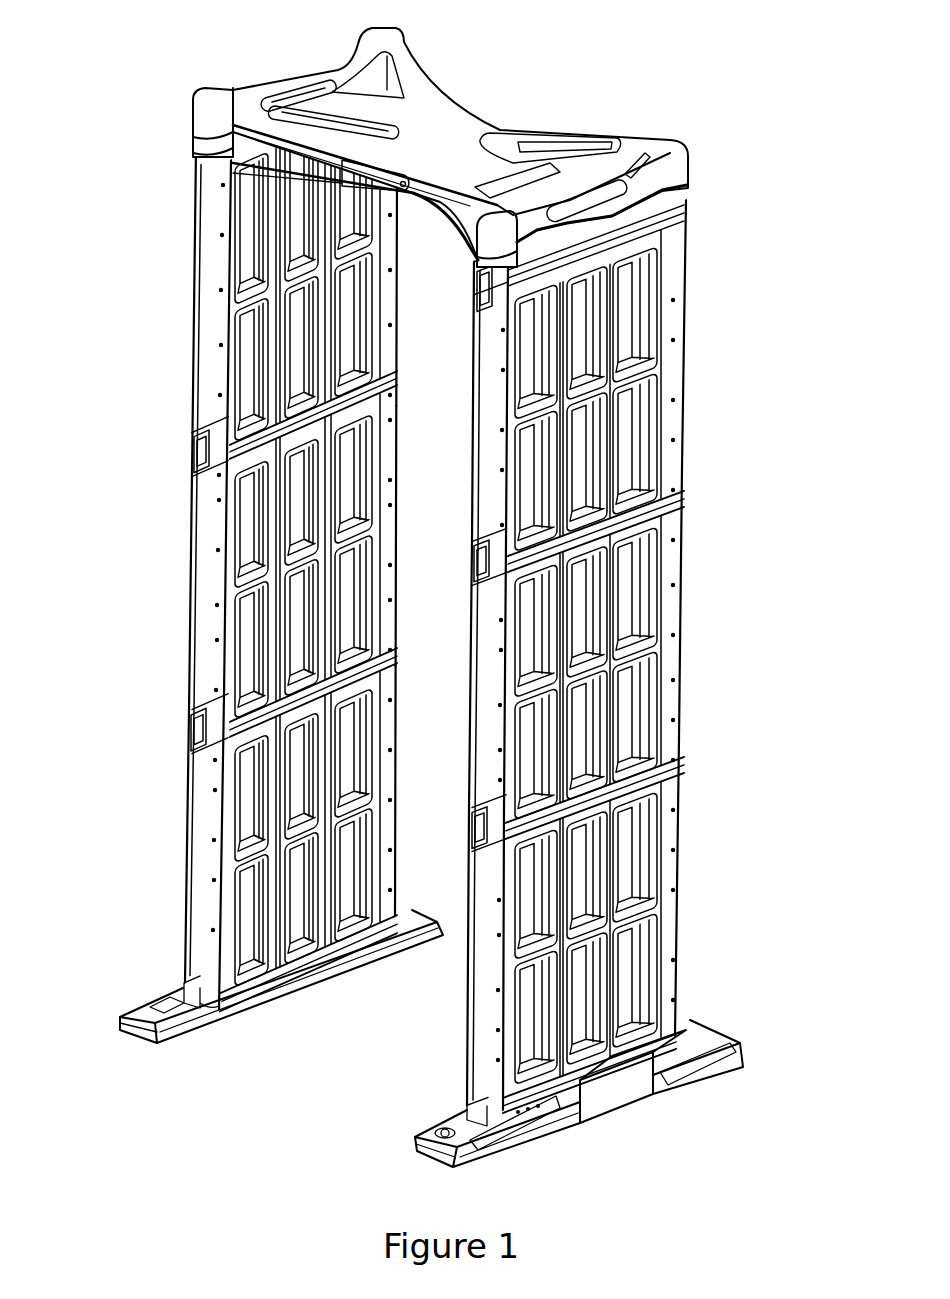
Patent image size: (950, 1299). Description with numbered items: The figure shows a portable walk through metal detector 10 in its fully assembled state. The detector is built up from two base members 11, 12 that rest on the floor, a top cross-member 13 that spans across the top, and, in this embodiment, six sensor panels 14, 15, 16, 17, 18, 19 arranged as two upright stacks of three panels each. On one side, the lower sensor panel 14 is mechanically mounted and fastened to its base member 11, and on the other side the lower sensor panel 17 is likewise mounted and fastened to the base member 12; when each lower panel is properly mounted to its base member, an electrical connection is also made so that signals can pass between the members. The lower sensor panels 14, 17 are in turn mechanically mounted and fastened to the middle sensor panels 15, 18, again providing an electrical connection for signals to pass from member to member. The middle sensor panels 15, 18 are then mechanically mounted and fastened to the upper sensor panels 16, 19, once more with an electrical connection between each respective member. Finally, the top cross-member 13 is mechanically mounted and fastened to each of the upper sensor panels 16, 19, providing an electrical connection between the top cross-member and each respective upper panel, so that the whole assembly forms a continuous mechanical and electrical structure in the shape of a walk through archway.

The portable walk through metal detector 10 is at (459, 598).
The base member 11 is at (117, 1040).
The base member 12 is at (634, 1120).
The top cross-member 13 is at (492, 98).
The lower sensor panel 14 is at (175, 890).
The middle sensor panel 15 is at (180, 605).
The upper sensor panel 16 is at (184, 325).
The lower sensor panel 17 is at (688, 915).
The middle sensor panel 18 is at (693, 641).
The upper sensor panel 19 is at (695, 367).